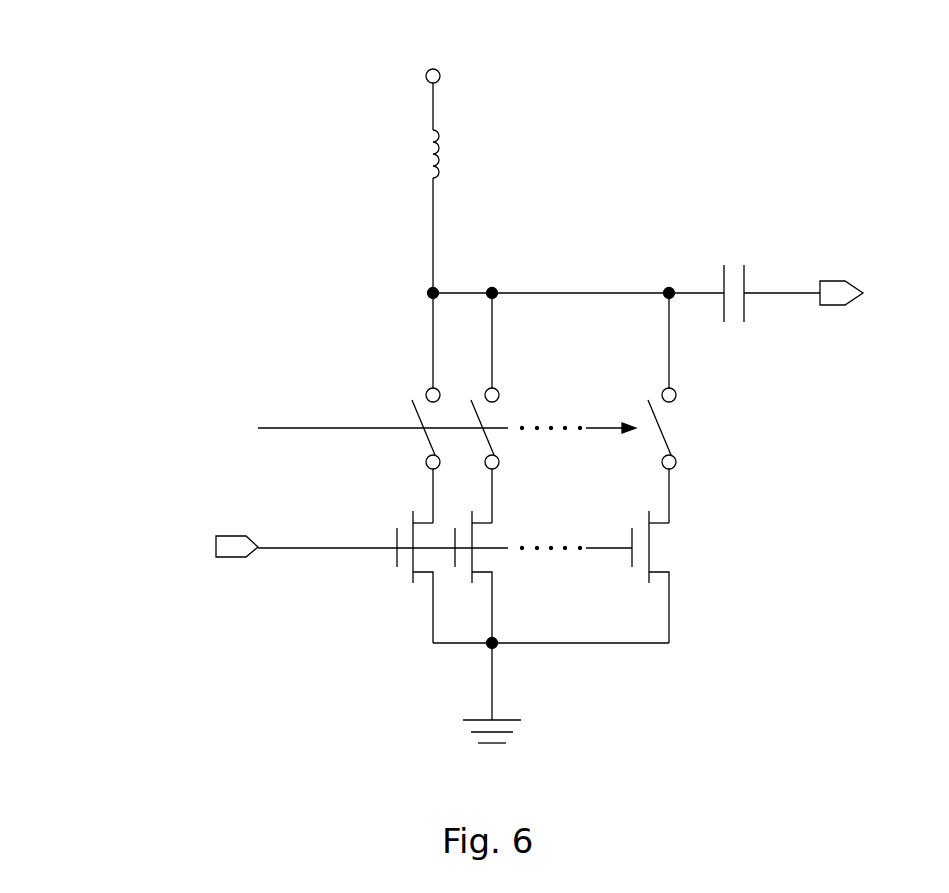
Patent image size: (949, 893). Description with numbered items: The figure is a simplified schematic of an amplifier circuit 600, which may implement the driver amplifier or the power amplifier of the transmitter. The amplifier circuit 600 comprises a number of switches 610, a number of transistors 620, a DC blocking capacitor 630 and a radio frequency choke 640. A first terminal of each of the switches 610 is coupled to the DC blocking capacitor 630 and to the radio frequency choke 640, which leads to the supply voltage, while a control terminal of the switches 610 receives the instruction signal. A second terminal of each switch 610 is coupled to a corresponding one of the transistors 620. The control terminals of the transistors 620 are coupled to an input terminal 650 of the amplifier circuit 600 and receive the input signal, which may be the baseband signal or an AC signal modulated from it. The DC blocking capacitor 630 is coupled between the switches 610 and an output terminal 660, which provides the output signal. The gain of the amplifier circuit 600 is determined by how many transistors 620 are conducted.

The amplifier circuit 600 is at (194, 73).
The switches 610 is at (676, 394).
The transistors 620 is at (650, 547).
The DC blocking capacitor 630 is at (724, 280).
The radio frequency choke 640 is at (443, 158).
The input terminal 650 is at (230, 557).
The output terminal 660 is at (840, 305).